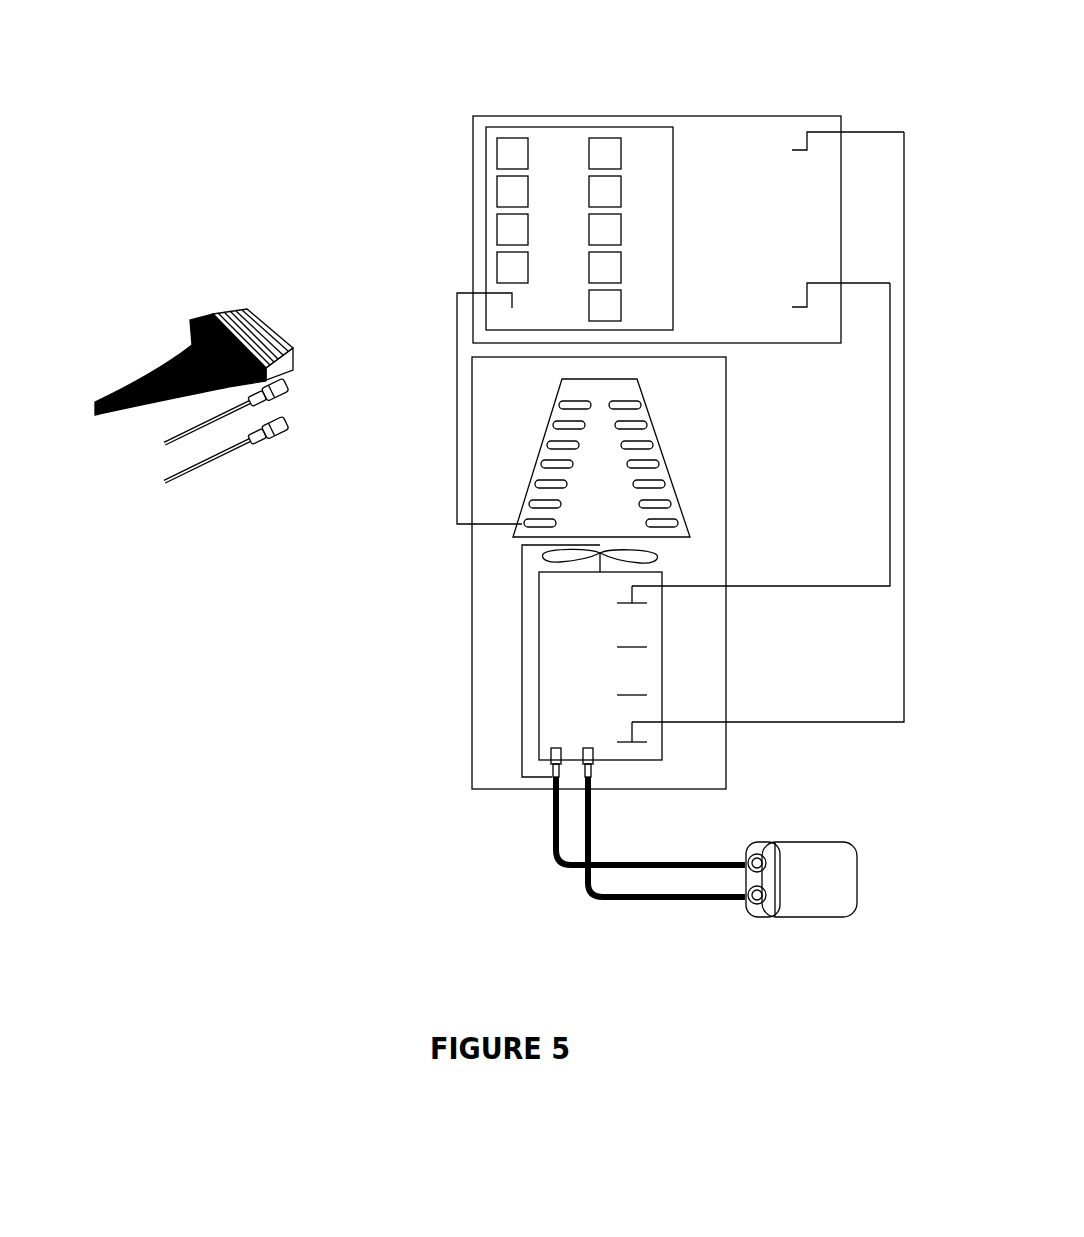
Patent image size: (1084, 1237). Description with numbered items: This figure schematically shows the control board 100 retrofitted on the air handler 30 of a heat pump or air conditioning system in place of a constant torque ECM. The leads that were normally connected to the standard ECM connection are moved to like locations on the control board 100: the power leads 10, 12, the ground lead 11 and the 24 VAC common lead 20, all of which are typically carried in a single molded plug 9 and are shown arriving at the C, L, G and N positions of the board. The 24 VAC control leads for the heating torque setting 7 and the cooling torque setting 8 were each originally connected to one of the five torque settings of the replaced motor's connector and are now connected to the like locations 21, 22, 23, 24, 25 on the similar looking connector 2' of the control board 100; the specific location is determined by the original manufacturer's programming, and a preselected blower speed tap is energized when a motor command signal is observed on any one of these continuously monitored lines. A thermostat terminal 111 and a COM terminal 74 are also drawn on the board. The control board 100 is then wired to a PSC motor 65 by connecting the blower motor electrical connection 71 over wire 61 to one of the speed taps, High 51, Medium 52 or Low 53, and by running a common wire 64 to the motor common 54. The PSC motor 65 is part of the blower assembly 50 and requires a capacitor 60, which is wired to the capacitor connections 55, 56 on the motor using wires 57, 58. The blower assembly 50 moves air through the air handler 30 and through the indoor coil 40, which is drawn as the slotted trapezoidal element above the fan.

The connector 2' is at (573, 173).
The control board 100 is at (707, 125).
The 24 VAC common lead 20 is at (509, 154).
The power lead 12 is at (509, 192).
The ground lead 11 is at (509, 230).
The power lead 10 is at (509, 268).
The connector location 21 is at (646, 154).
The connector location 22 is at (646, 192).
The connector location 23 is at (646, 230).
The connector location 24 is at (646, 268).
The connector location 25 is at (646, 306).
The COM terminal 74 is at (797, 148).
The blower motor electrical connection 71 is at (797, 305).
The molded plug 9 is at (202, 320).
The heating control lead 7 is at (285, 398).
The cooling control lead 8 is at (285, 436).
The air handler 30 is at (480, 407).
The indoor coil 40 is at (627, 388).
The wire 61 is at (885, 470).
The thermal cutoff wiring 111 is at (517, 530).
The High speed tap 51 is at (624, 600).
The Medium speed tap 52 is at (624, 645).
The Low speed tap 53 is at (624, 692).
The motor common 54 is at (624, 740).
The PSC motor 65 is at (550, 607).
The blower assembly 50 is at (520, 665).
The common wire 64 is at (900, 645).
The capacitor connection 55 is at (545, 752).
The capacitor connection 56 is at (598, 752).
The wire 57 is at (600, 837).
The wire 58 is at (586, 885).
The capacitor 60 is at (807, 862).